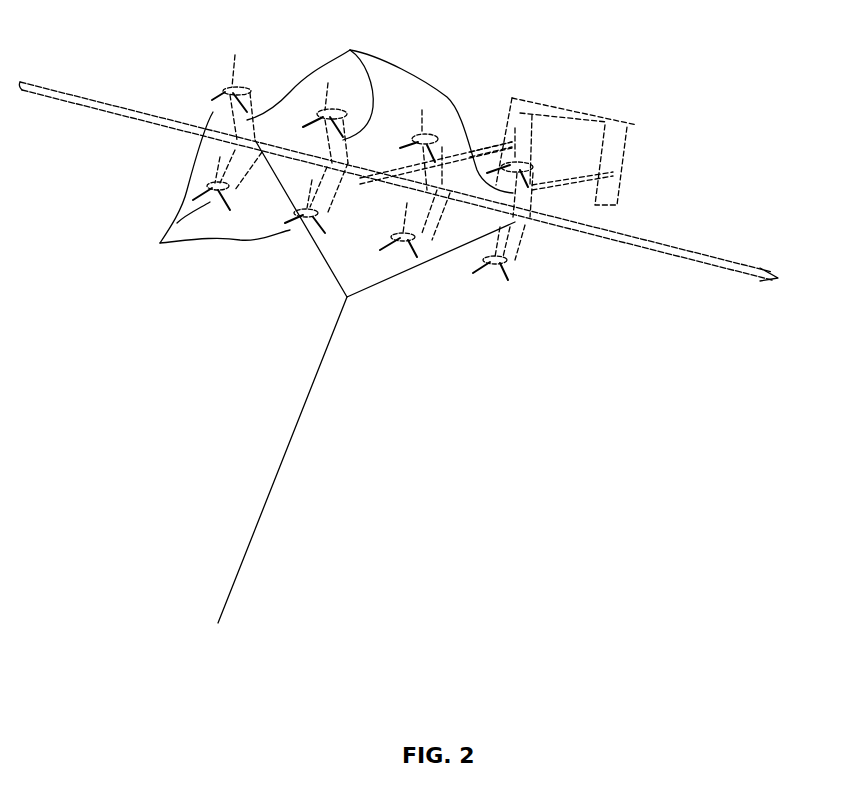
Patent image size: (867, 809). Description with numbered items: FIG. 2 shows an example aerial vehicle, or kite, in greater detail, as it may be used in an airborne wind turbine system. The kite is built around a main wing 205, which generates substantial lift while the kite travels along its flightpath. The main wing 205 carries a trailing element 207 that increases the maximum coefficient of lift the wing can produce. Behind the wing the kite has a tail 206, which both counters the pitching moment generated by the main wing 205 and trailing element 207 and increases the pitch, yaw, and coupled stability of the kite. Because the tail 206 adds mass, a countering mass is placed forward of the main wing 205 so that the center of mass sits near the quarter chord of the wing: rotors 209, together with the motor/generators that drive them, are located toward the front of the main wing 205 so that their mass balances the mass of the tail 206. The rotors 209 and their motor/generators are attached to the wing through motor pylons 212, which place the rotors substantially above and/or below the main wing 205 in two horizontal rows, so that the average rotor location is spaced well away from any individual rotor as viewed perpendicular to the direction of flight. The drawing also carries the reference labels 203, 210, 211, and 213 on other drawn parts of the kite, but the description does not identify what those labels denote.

The tail boom 203 is at (293, 438).
The main wing 205 is at (110, 105).
The tail 206 is at (563, 108).
The trailing element 207 is at (770, 282).
The rotors 209 is at (328, 108).
The frame member 210 is at (333, 283).
The sail / tether attachment point 211 is at (336, 139).
The motor pylons 212 is at (245, 183).
The motor 213 is at (233, 175).